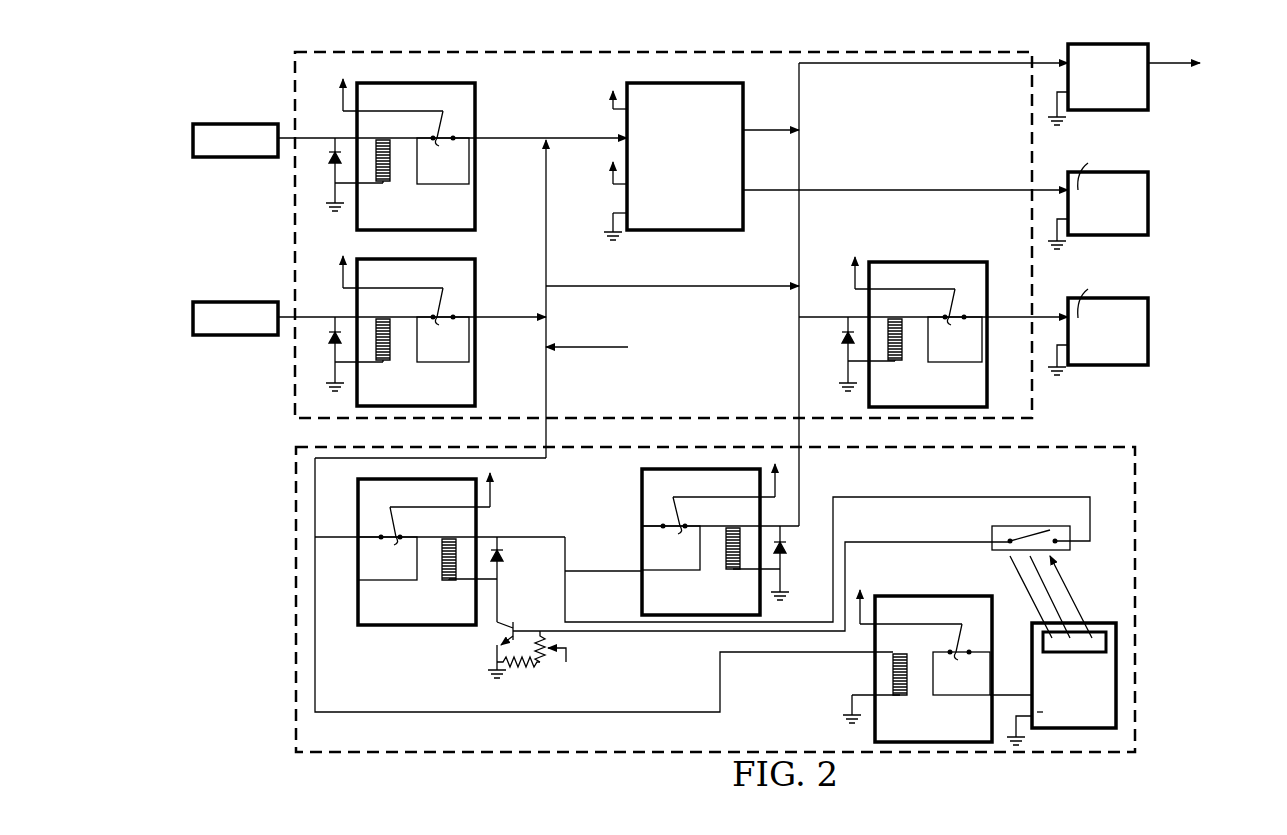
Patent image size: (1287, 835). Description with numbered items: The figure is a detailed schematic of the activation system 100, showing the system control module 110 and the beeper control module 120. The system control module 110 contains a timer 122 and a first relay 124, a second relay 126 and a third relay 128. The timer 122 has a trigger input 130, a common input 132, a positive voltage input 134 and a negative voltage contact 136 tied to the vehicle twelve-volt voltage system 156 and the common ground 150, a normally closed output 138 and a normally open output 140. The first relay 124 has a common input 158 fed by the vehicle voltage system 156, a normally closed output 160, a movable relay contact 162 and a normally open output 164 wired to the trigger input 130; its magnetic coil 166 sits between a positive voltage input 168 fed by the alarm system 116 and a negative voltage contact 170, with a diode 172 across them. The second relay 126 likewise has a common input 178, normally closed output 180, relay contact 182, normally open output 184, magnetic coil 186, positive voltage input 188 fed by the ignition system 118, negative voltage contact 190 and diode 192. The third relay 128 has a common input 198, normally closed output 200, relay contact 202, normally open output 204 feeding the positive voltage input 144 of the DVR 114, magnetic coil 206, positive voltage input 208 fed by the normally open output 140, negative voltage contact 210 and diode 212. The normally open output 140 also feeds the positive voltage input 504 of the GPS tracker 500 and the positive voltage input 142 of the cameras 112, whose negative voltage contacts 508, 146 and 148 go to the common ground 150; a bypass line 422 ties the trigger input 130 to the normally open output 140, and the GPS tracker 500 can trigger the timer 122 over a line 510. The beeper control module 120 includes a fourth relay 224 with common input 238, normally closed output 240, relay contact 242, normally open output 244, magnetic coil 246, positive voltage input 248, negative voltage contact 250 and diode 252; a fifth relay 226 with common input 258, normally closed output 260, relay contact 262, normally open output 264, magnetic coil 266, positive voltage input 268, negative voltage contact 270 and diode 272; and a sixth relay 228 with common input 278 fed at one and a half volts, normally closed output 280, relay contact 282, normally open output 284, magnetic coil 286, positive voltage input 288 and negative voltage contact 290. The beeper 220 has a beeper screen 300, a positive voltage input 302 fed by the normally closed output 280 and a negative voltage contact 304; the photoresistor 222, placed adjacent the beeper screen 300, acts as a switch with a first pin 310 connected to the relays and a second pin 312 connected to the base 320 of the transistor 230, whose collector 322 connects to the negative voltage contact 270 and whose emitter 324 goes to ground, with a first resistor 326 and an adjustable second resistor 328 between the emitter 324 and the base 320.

The activation system 100 is at (272, 442).
The system control module 110 is at (985, 50).
The cameras 112 is at (1128, 172).
The DVR 114 is at (1128, 298).
The alarm system 116 is at (233, 122).
The ignition system 118 is at (233, 300).
The beeper control module 120 is at (1092, 445).
The timer 122 is at (745, 92).
The first relay 124 is at (475, 90).
The second relay 126 is at (475, 268).
The third relay 128 is at (987, 270).
The trigger input 130 is at (650, 132).
The common input 132 is at (650, 104).
The positive voltage input 134 is at (636, 183).
The negative voltage contact 136 is at (636, 211).
The normally closed output 138 is at (730, 180).
The normally open output 140 is at (730, 124).
The positive voltage input 142 is at (1100, 169).
The positive voltage input 144 is at (1100, 296).
The negative voltage contact 146 is at (1078, 220).
The negative voltage contact 148 is at (1078, 347).
The common ground 150 is at (328, 207).
The vehicle 12 V voltage system 156 is at (343, 103).
The common input 158 is at (395, 106).
The normally closed output 160 is at (440, 184).
The movable relay contact 162 is at (437, 143).
The normally open output 164 is at (460, 124).
The magnetic coil 166 is at (390, 172).
The positive voltage input 168 is at (368, 135).
The negative voltage contact 170 is at (368, 190).
The diode 172 is at (328, 158).
The common input 178 is at (395, 283).
The normally closed output 180 is at (440, 362).
The relay contact 182 is at (437, 322).
The normally open output 184 is at (460, 302).
The magnetic coil 186 is at (390, 350).
The positive voltage input 188 is at (368, 314).
The negative voltage contact 190 is at (368, 368).
The diode 192 is at (328, 337).
The common input 198 is at (908, 284).
The normally closed output 200 is at (952, 362).
The relay contact 202 is at (949, 322).
The normally open output 204 is at (972, 303).
The magnetic coil 206 is at (902, 350).
The positive voltage input 208 is at (880, 314).
The negative voltage contact 210 is at (880, 368).
The diode 212 is at (841, 337).
The beeper 220 is at (1116, 680).
The photoresistor 222 is at (1034, 542).
The fourth relay 224 is at (726, 470).
The fifth relay 226 is at (440, 480).
The sixth relay 228 is at (958, 597).
The transistor 230 is at (487, 628).
The common input 238 is at (718, 498).
The normally closed output 240 is at (676, 570).
The relay contact 242 is at (680, 533).
The normally open output 244 is at (650, 513).
The magnetic coil 246 is at (725, 560).
The positive voltage input 248 is at (748, 521).
The negative voltage contact 250 is at (750, 581).
The diode 252 is at (786, 548).
The common input 258 is at (435, 508).
The normally closed output 260 is at (392, 580).
The relay contact 262 is at (396, 544).
The normally open output 264 is at (364, 523).
The magnetic coil 266 is at (440, 570).
The positive voltage input 268 is at (464, 532).
The negative voltage contact 270 is at (465, 592).
The diode 272 is at (503, 556).
The common input 278 is at (912, 618).
The normally closed output 280 is at (960, 695).
The relay contact 282 is at (956, 657).
The normally open output 284 is at (978, 637).
The magnetic coil 286 is at (907, 684).
The positive voltage input 288 is at (886, 650).
The negative voltage contact 290 is at (886, 702).
The beeper screen 300 is at (1100, 640).
The positive voltage input 302 is at (1045, 692).
The negative voltage contact 304 is at (1045, 710).
The first pin 310 is at (1058, 546).
The second pin 312 is at (990, 531).
The base 320 is at (524, 634).
The collector 322 is at (514, 625).
The emitter 324 is at (500, 640).
The first resistor 326 is at (530, 680).
The adjustable second resistor 328 is at (570, 665).
The bypass line 422 is at (676, 290).
The GPS tracker 500 is at (1128, 44).
The positive voltage input 504 is at (1078, 64).
The negative voltage contact 508 is at (1078, 94).
The line 510 is at (590, 348).